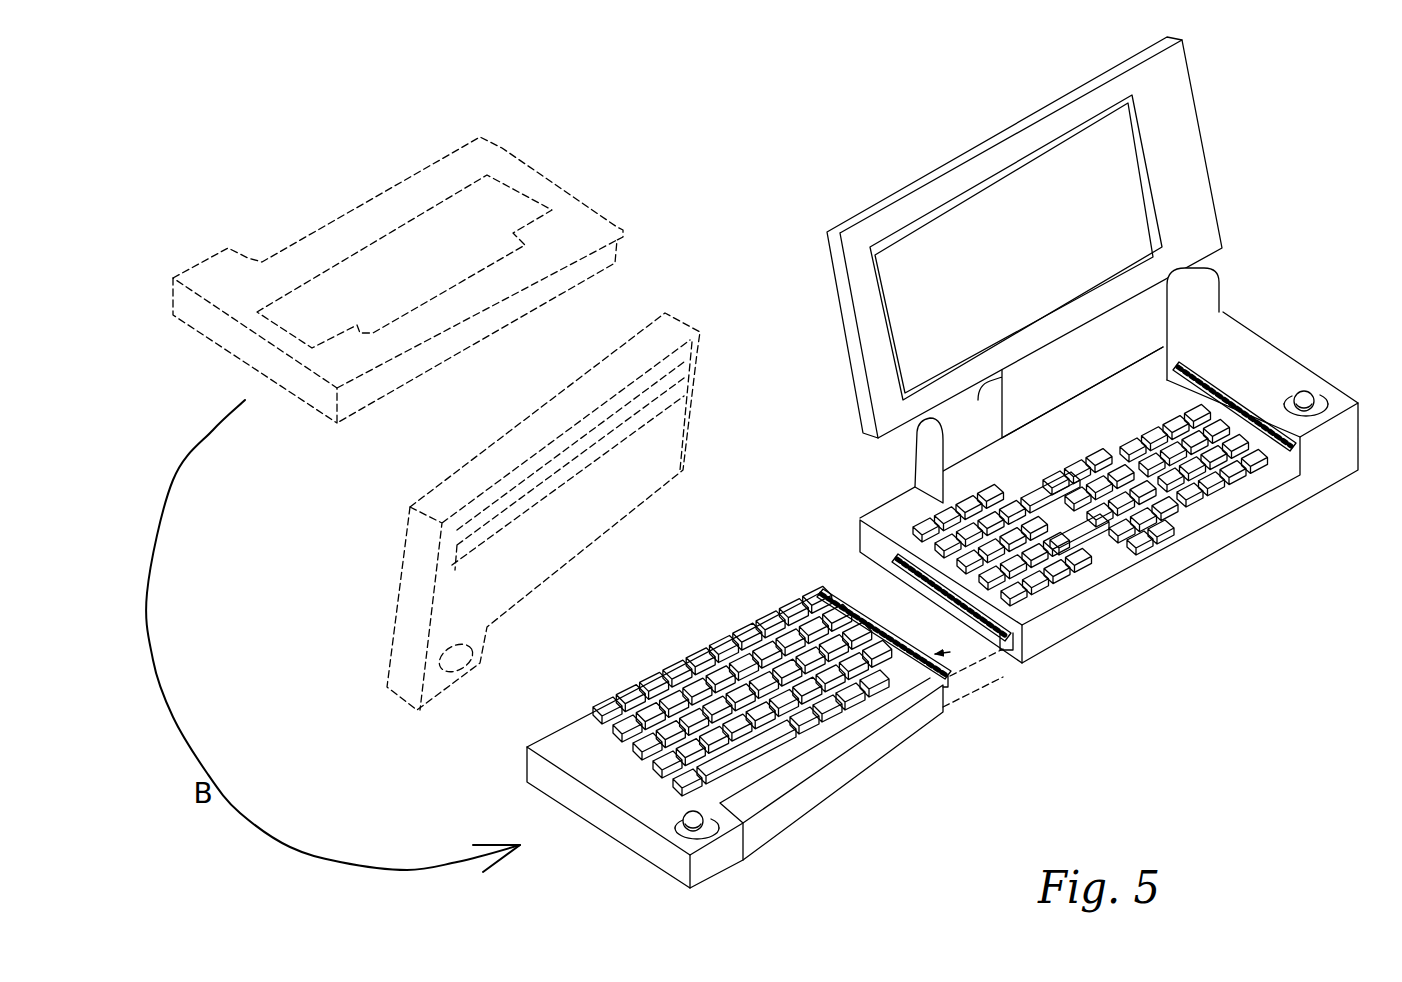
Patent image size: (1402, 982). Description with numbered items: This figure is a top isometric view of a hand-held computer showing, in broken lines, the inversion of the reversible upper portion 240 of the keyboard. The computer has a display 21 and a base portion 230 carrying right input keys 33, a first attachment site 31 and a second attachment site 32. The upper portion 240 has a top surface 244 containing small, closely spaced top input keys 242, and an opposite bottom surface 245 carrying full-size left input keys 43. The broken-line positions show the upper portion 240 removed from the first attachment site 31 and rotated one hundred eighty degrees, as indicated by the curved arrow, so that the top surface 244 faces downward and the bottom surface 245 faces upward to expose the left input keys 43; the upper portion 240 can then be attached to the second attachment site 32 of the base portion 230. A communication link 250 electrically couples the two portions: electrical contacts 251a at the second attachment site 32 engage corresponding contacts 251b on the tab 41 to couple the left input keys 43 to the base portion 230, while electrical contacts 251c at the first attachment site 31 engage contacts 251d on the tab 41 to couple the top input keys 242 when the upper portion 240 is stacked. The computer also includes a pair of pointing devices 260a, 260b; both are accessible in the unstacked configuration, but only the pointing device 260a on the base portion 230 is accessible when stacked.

The display 21 is at (1206, 140).
The first attachment site 31 is at (1216, 376).
The second attachment site 32 is at (990, 642).
The right input keys 33 is at (1162, 534).
The tab 41 is at (855, 640).
The left input keys 43 is at (825, 718).
The base portion 230 is at (1340, 480).
The reversible upper portion 240 is at (726, 848).
The top input keys 242 is at (483, 172).
The top surface 244 is at (577, 225).
The bottom surface 245 is at (367, 407).
The communication link 250 is at (1280, 458).
The electrical contacts 251a is at (905, 585).
The electrical contacts 251b is at (838, 585).
The electrical contacts 251c is at (1257, 418).
The electrical contacts 251d is at (850, 592).
The pointing device 260a is at (1315, 385).
The pointing device 260b is at (669, 850).